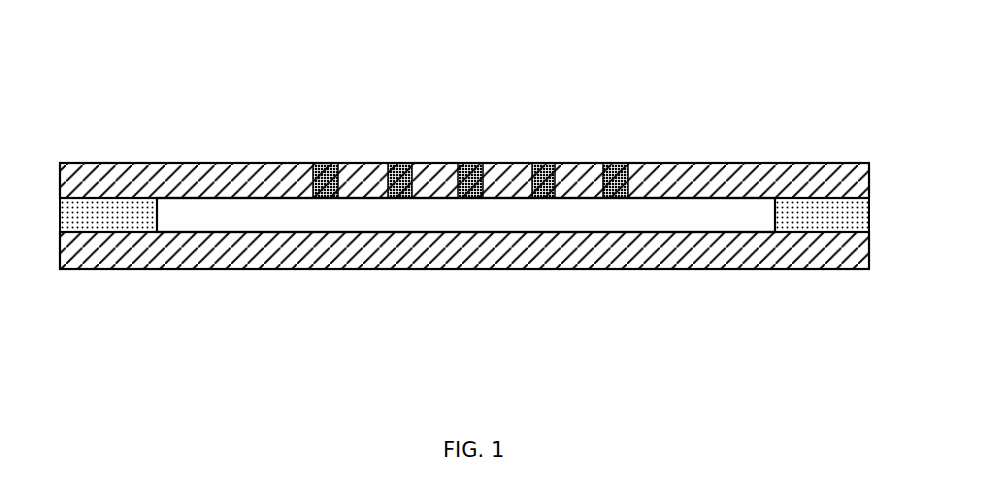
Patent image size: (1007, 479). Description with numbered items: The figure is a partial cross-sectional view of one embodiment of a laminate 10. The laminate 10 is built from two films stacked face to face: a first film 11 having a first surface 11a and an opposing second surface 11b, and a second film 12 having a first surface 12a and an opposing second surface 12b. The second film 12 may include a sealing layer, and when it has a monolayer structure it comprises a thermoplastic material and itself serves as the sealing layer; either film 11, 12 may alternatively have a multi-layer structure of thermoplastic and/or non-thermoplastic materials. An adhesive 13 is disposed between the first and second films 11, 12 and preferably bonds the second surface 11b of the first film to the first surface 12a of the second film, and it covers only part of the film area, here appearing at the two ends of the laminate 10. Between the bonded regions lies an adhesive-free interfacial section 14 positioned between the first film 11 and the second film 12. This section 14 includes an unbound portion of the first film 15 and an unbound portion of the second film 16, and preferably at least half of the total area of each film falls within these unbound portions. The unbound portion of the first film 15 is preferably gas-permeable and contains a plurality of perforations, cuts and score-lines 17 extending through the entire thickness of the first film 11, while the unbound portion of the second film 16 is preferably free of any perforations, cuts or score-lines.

The laminate 10 is at (417, 88).
The first film 11 is at (140, 177).
The first surface of first film 11a is at (232, 163).
The second surface of first film 11b is at (252, 203).
The second film 12 is at (840, 248).
The first surface of second film 12a is at (693, 230).
The second surface of second film 12b is at (737, 263).
The adhesive 13 is at (115, 218).
The adhesive-free interfacial section 14 is at (520, 218).
The unbound portion of the first film 15 is at (287, 197).
The unbound portion of the second film 16 is at (403, 232).
The perforations, cuts and score-lines 17 is at (602, 163).